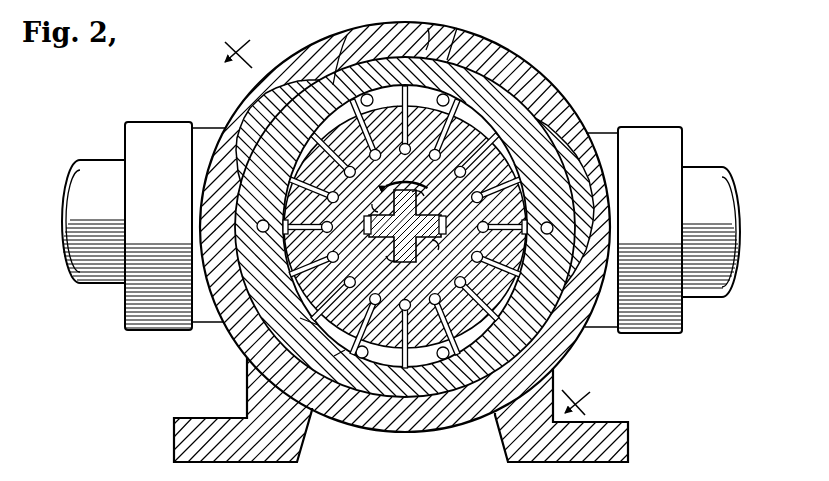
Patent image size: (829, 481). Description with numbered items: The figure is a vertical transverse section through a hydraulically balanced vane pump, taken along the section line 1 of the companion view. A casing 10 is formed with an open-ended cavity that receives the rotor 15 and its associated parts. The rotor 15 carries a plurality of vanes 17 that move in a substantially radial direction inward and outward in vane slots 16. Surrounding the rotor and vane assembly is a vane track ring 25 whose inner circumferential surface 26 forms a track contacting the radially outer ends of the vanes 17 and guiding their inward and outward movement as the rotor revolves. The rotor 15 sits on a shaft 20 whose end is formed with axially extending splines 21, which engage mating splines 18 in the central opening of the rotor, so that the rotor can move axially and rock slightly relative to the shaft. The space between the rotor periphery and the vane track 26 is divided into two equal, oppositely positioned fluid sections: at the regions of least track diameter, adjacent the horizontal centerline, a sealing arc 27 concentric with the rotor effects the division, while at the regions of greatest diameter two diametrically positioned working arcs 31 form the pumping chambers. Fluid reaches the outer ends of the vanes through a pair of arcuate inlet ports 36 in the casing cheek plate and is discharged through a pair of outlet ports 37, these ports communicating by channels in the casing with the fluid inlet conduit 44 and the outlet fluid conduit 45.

The section line 1 is at (415, 223).
The casing 10 is at (556, 96).
The rotor 15 is at (340, 210).
The vane slots 16 is at (366, 142).
The vanes 17 is at (347, 35).
The mating splines 18 is at (440, 205).
The shaft 20 is at (405, 222).
The axially extending splines 21 is at (378, 252).
The vane track ring 25 is at (275, 118).
The inner circumferential surface (vane track) 26 is at (571, 120).
The sealing arc 27 is at (283, 197).
The working arcs (pumping arcs) 31 is at (474, 42).
The inlet ports 36 is at (335, 336).
The outlet ports 37 is at (300, 76).
The fluid inlet conduit 44 is at (733, 285).
The outlet fluid conduit 45 is at (112, 286).